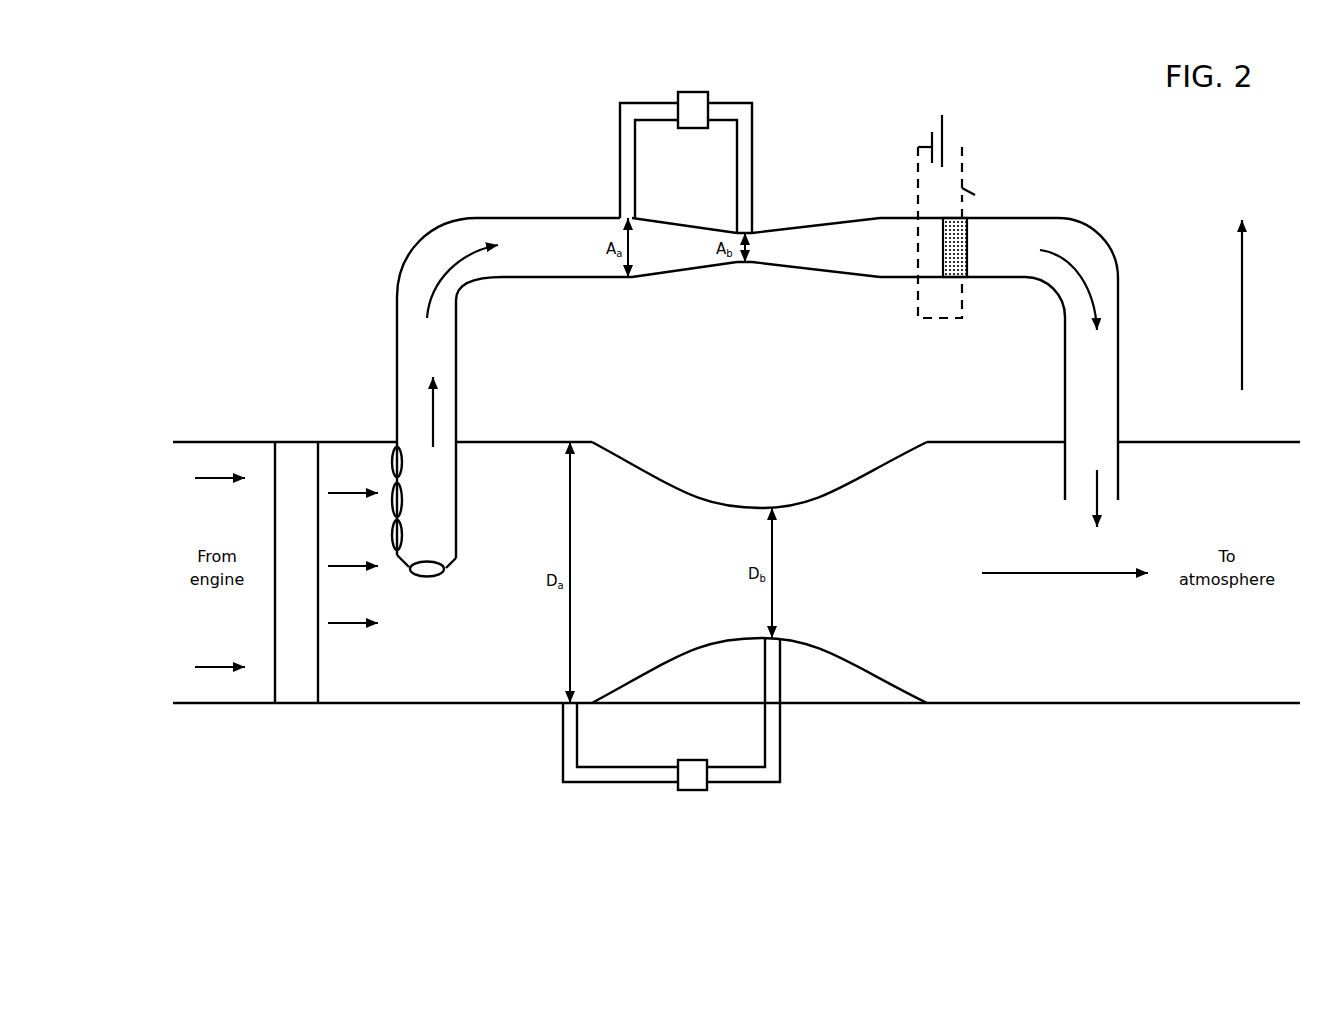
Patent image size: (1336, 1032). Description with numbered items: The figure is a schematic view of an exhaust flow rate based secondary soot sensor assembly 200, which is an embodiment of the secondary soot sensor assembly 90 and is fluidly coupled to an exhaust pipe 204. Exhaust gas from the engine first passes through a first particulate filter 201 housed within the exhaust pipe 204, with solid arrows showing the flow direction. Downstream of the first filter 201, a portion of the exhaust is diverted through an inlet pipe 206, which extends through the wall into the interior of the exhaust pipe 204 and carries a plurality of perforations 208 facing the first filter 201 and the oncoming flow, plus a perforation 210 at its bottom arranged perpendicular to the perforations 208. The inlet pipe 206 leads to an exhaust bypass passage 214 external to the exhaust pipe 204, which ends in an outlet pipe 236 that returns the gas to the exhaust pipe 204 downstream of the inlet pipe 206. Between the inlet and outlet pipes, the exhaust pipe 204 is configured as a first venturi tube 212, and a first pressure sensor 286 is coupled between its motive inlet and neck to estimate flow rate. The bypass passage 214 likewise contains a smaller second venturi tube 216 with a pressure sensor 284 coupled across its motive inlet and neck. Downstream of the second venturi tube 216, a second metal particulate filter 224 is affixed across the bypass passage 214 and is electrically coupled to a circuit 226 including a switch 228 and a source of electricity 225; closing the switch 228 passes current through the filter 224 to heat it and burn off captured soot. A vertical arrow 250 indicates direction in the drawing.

The secondary soot sensor assembly 90 is at (1178, 186).
The exhaust flow rate based secondary soot sensor assembly 200 is at (1173, 132).
The first particulate filter 201 is at (296, 572).
The exhaust pipe 204 is at (736, 572).
The inlet pipe 206 is at (433, 507).
The perforations 208 is at (372, 480).
The perforation 210 is at (428, 578).
The first venturi tube 212 is at (738, 508).
The exhaust bypass passage 214 is at (577, 278).
The second venturi tube 216 is at (752, 262).
The second metal particulate filter 224 is at (967, 260).
The source of electricity 225 is at (932, 147).
The circuit 226 is at (962, 147).
The switch 228 is at (975, 195).
The outlet pipe 236 is at (1105, 420).
The vertical direction 250 is at (1242, 298).
The pressure sensor 284 is at (690, 92).
The first pressure sensor 286 is at (697, 760).